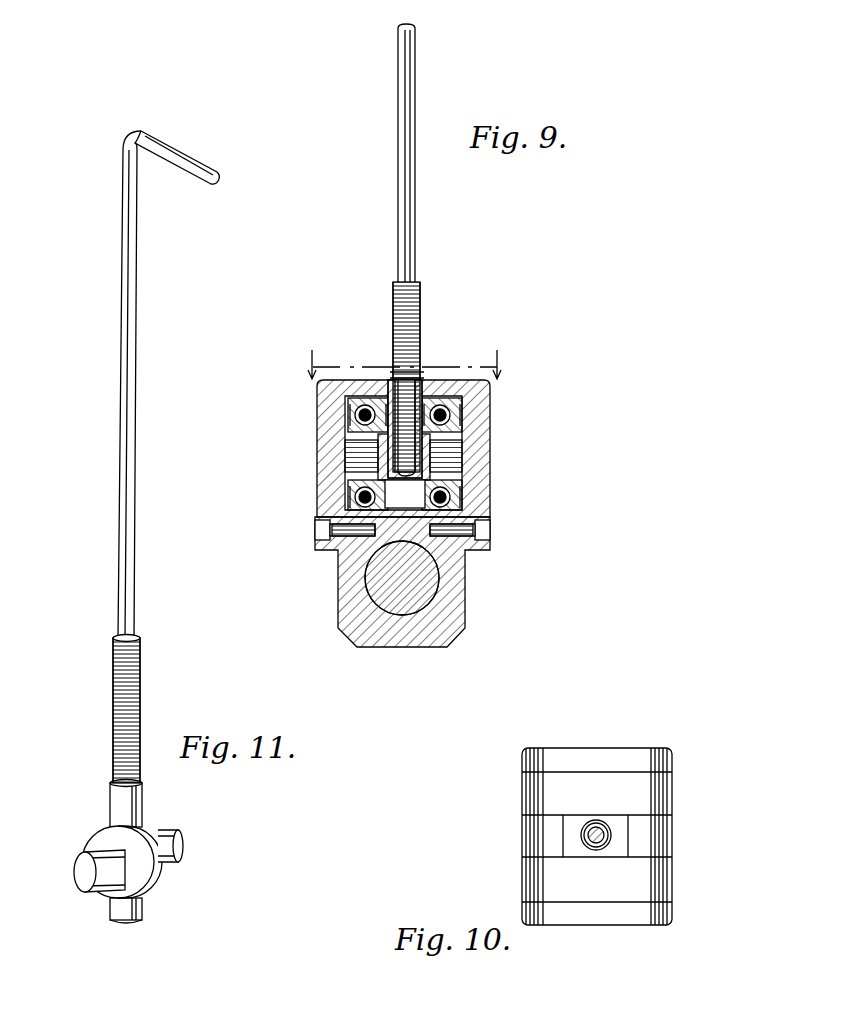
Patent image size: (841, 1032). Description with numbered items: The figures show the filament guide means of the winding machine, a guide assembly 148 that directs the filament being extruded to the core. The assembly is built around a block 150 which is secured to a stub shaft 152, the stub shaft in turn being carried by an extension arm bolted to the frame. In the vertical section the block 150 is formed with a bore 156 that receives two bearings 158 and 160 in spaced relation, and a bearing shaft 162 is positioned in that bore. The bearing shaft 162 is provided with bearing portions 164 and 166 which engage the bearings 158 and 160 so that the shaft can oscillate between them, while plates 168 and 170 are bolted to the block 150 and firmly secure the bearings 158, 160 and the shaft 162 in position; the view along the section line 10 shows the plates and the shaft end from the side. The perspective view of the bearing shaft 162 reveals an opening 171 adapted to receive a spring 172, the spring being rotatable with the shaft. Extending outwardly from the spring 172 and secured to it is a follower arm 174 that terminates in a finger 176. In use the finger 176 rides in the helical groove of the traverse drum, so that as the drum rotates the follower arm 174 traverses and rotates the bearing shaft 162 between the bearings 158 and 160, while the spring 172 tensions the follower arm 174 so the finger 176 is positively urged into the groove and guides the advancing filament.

In FIG. 9, the section line 10 is at (404, 362).
In FIG. 9, the guide assembly 148 is at (510, 511).
In FIG. 10, the guide assembly 148 is at (630, 742).
In FIG. 9, the block 150 is at (455, 589).
In FIG. 10, the block 150 is at (663, 795).
In FIG. 9, the stub shaft 152 is at (382, 589).
In FIG. 9, the bore 156 is at (440, 395).
In FIG. 9, the bearing 158 is at (462, 430).
In FIG. 9, the bearing 160 is at (355, 403).
In FIG. 9, the bearing shaft 162 is at (367, 455).
In FIG. 11, the bearing shaft 162 is at (150, 868).
In FIG. 9, the bearing portion 164 is at (452, 451).
In FIG. 11, the bearing portion 164 is at (170, 842).
In FIG. 9, the bearing portion 166 is at (353, 452).
In FIG. 11, the bearing portion 166 is at (82, 868).
In FIG. 9, the plate 168 is at (478, 410).
In FIG. 10, the plate 168 is at (552, 753).
In FIG. 9, the plate 170 is at (325, 477).
In FIG. 10, the plate 170 is at (608, 915).
In FIG. 9, the opening 171 is at (397, 372).
In FIG. 11, the opening 171 is at (110, 782).
In FIG. 9, the spring 172 is at (392, 324).
In FIG. 10, the spring 172 is at (602, 823).
In FIG. 11, the spring 172 is at (114, 688).
In FIG. 9, the follower arm 174 is at (397, 133).
In FIG. 10, the follower arm 174 is at (594, 847).
In FIG. 11, the follower arm 174 is at (124, 336).
In FIG. 11, the finger 176 is at (176, 151).